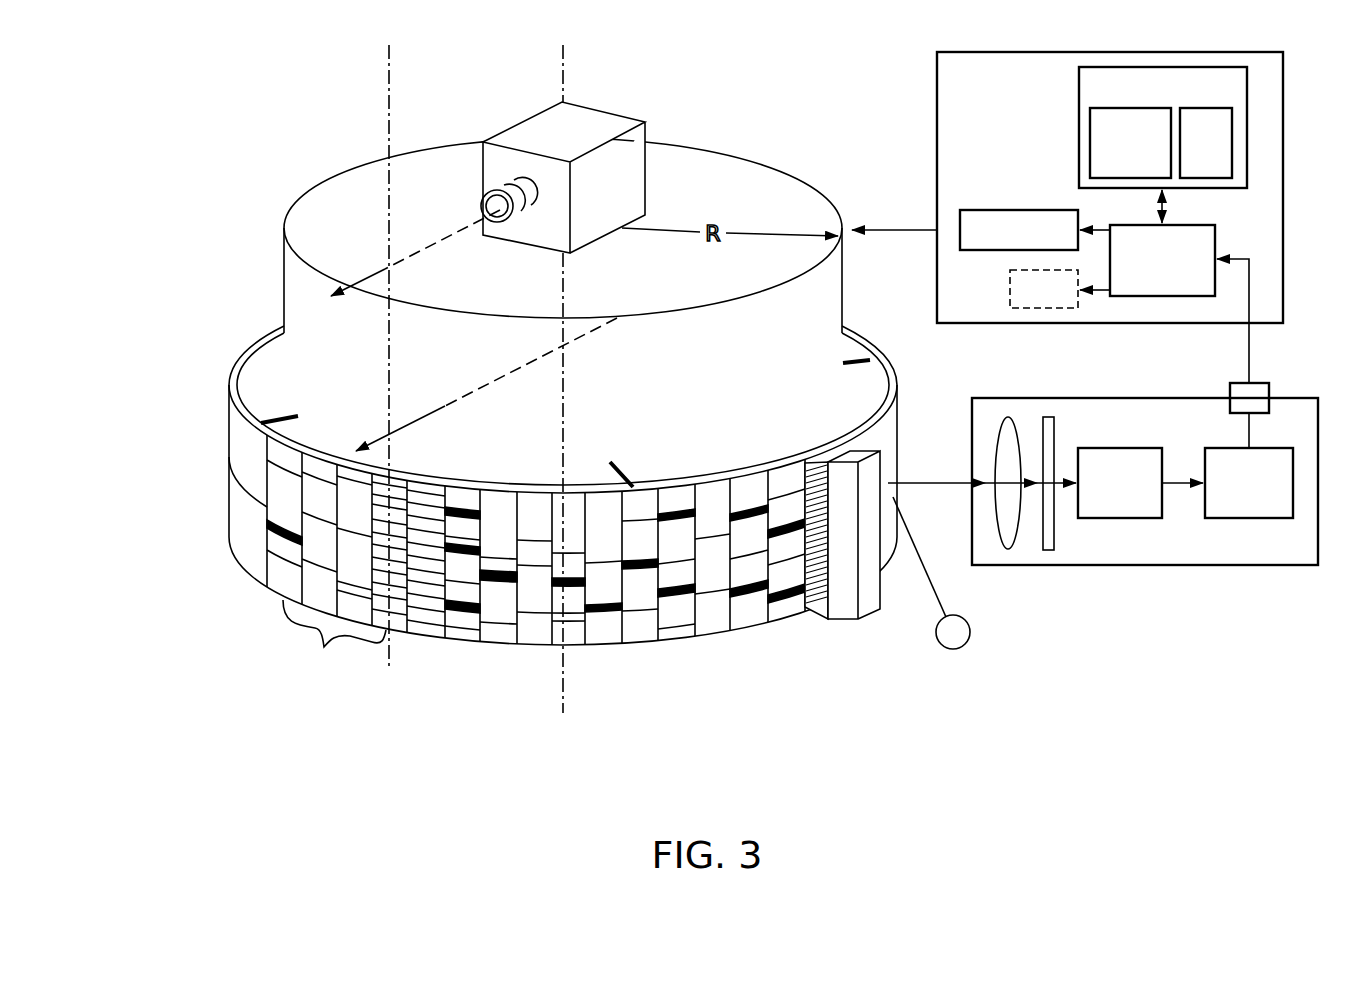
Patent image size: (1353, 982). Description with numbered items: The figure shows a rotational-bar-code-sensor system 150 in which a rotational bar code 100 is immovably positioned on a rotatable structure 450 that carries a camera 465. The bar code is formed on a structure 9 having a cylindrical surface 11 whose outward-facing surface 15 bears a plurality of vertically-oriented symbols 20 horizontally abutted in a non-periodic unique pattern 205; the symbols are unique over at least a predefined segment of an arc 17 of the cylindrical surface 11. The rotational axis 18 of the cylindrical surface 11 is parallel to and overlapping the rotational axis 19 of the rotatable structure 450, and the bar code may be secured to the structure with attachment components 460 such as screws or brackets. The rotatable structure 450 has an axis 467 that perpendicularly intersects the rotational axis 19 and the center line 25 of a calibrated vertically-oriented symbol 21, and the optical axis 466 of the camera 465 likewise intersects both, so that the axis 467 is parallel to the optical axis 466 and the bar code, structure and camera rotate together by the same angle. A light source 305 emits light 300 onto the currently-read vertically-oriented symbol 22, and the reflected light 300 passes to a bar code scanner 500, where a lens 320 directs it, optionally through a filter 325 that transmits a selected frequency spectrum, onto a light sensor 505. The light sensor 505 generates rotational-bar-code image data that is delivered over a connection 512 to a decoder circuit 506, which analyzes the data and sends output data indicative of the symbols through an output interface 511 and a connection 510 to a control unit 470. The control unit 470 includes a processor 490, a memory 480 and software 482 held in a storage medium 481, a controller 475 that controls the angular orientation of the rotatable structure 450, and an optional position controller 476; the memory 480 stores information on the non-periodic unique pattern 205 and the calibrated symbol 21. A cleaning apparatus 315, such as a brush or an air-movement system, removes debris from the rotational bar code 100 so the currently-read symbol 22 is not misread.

The structure 9 is at (249, 349).
The cylindrical surface 11 is at (236, 506).
The outward-facing surface 15 is at (231, 437).
The arc 17 is at (334, 637).
The rotational axis 18 is at (563, 703).
The rotational axis 19 is at (563, 80).
The vertically-oriented symbols 20 is at (462, 660).
The calibrated vertically-oriented symbol 21 is at (400, 628).
The currently-read vertically-oriented symbol 22 is at (890, 550).
The center line 25 is at (389, 93).
The rotational bar code 100 is at (230, 576).
The rotational-bar-code-sensor system 150 is at (834, 731).
The non-periodic unique pattern 205 is at (160, 458).
The light 300 is at (943, 480).
The light source 305 is at (972, 638).
The cleaning apparatus 315 is at (870, 607).
The lens 320 is at (1008, 416).
The filter 325 is at (1050, 551).
The rotatable structure 450 is at (284, 268).
The attachment components 460 is at (298, 416).
The camera 465 is at (600, 117).
The optical axis 466 is at (445, 242).
The axis 467 is at (443, 408).
The control unit 470 is at (937, 100).
The controller 475 is at (983, 250).
The position controller 476 is at (1028, 302).
The memory 480 is at (1090, 137).
The storage medium 481 is at (1079, 172).
The software 482 is at (1222, 178).
The processor 490 is at (1148, 297).
The bar code scanner 500 is at (1200, 566).
The light sensor 505 is at (1097, 447).
The decoder circuit 506 is at (1287, 446).
The connection 510 is at (1249, 353).
The output interface 511 is at (1230, 392).
The connection 512 is at (1176, 478).